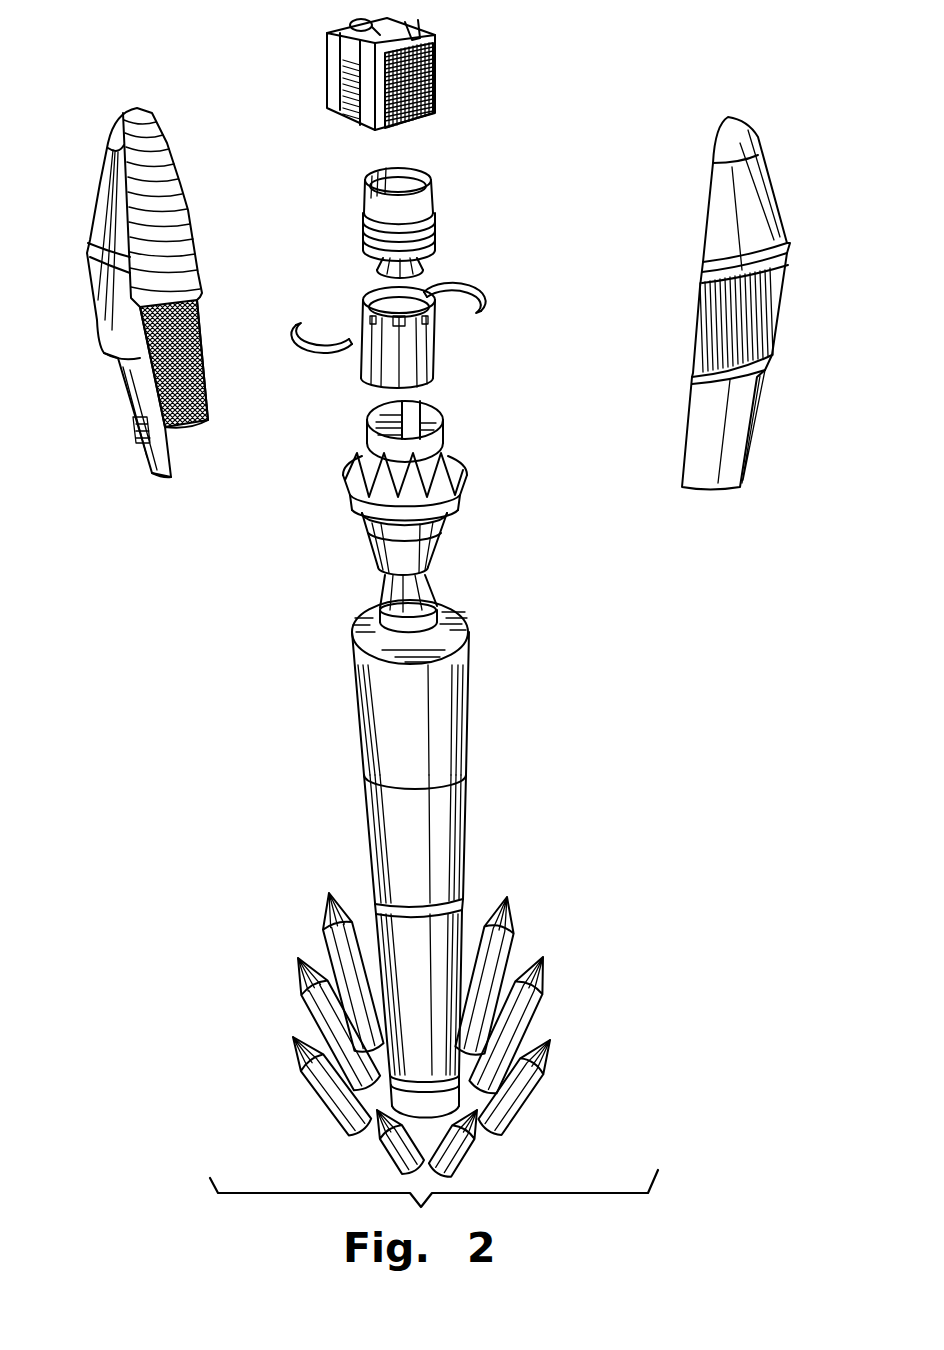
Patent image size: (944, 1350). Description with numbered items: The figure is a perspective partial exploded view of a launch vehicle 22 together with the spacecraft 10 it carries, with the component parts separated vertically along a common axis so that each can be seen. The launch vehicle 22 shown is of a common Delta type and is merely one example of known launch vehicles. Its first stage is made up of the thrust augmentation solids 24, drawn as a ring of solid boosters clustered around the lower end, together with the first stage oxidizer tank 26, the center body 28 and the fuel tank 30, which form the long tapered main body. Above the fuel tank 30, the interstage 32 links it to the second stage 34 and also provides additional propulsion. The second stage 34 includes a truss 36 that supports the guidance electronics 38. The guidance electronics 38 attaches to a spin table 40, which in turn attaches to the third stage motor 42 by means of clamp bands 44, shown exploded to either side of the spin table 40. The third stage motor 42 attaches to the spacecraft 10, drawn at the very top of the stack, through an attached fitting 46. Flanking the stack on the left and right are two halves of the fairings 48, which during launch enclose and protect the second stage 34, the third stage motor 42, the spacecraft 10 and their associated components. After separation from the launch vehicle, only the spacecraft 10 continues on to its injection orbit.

The spacecraft 10 is at (440, 57).
The launch vehicle 22 is at (298, 617).
The thrust augmentation solids 24 is at (550, 1037).
The first stage oxidizer tank 26 is at (440, 948).
The center body 28 is at (466, 905).
The fuel tank 30 is at (440, 793).
The interstage 32 is at (443, 707).
The second stage 34 is at (368, 553).
The truss 36 is at (345, 467).
The guidance electronics 38 is at (427, 447).
The spin table 40 is at (433, 352).
The third stage motor 42 is at (437, 233).
The clamp bands 44 is at (482, 290).
The attached fitting 46 is at (430, 193).
The fairings 48 is at (100, 178).